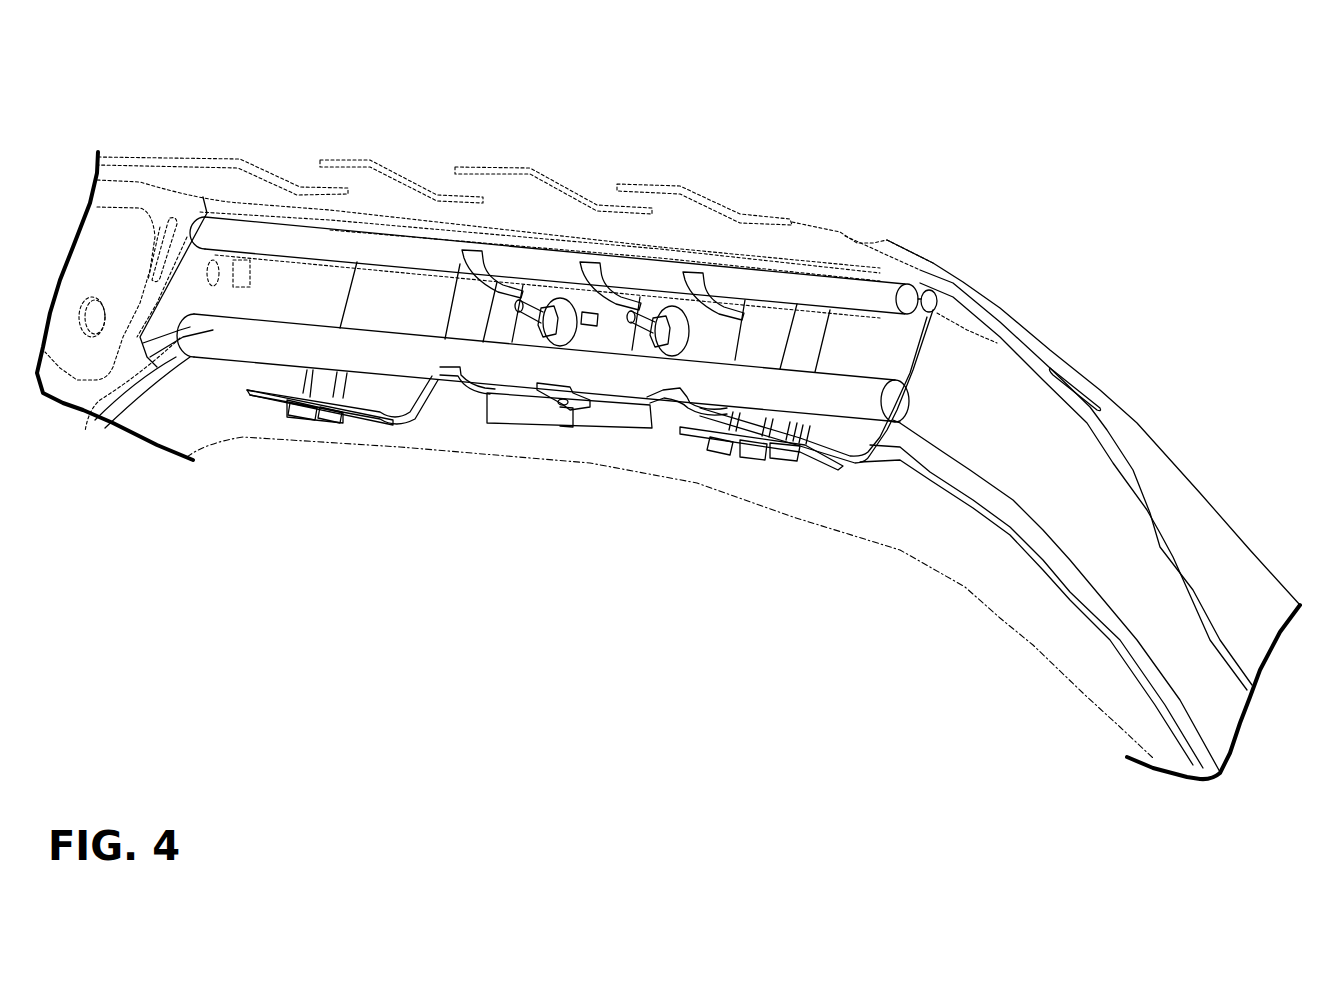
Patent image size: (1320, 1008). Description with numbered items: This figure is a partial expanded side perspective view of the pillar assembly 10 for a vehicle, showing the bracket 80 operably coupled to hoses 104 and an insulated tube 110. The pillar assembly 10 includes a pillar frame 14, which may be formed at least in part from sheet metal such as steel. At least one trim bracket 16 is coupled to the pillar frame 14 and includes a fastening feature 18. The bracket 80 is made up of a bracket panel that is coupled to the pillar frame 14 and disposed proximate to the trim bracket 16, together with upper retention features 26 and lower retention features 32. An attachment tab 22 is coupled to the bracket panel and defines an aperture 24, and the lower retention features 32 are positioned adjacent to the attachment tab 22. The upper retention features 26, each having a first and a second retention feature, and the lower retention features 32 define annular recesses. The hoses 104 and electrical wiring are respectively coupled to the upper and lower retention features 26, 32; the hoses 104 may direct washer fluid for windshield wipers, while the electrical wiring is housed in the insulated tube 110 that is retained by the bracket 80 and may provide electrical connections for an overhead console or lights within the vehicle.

The pillar assembly 10 is at (232, 125).
The pillar frame 14 is at (1150, 463).
The trim bracket 16 is at (390, 407).
The fastening feature 18 is at (330, 417).
The attachment tab 22 is at (600, 420).
The aperture 24 is at (557, 420).
The upper retention features 26 is at (465, 255).
The lower retention features 32 is at (452, 397).
The bracket 80 is at (753, 307).
The hoses 104 is at (910, 288).
The insulated tube 110 is at (847, 403).